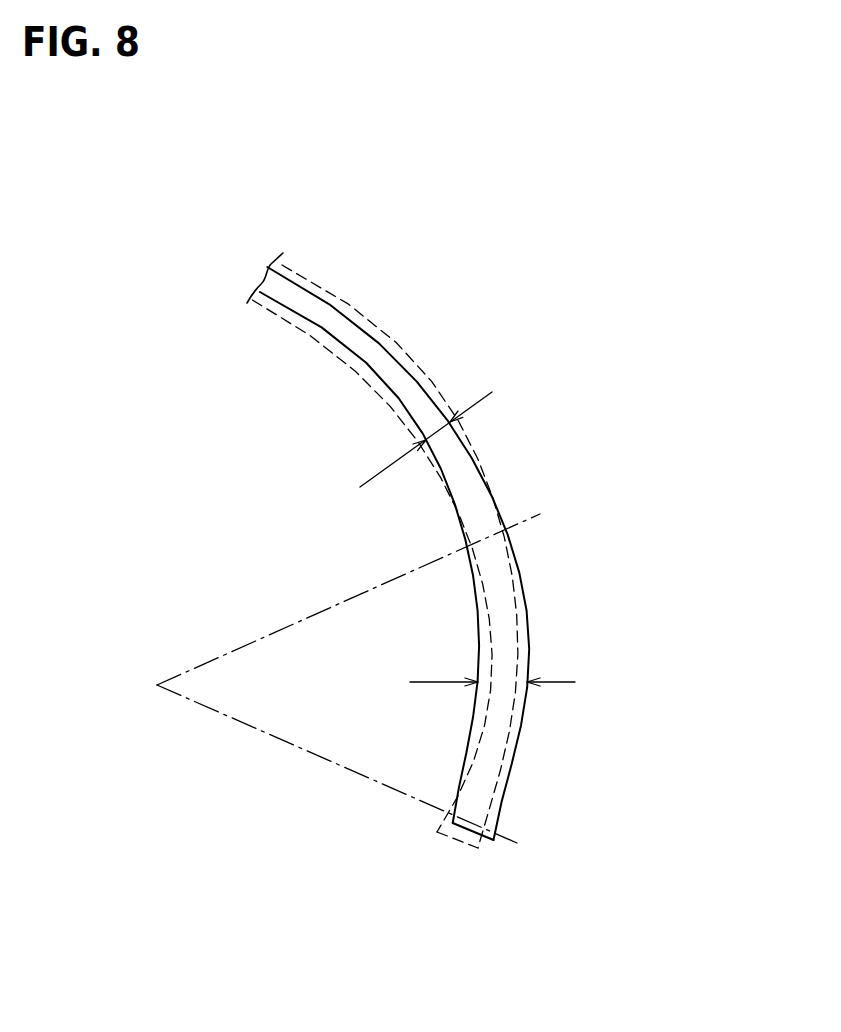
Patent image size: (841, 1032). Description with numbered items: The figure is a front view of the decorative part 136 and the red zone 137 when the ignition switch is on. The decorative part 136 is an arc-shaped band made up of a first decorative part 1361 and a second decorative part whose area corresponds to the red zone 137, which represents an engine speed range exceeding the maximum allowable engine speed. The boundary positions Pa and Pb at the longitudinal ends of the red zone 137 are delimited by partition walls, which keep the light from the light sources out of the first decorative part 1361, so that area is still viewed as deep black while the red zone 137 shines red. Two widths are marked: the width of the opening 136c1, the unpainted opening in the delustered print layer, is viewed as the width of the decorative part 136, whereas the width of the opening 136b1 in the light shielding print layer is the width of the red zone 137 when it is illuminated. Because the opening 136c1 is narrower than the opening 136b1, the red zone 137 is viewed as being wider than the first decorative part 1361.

The decorative part 136 is at (423, 546).
The first decorative part 1361 is at (435, 433).
The red zone 137 is at (503, 682).
The boundary position Pa is at (538, 508).
The boundary position Pb is at (507, 836).
The opening 136c1 is at (524, 428).
The opening 136b1 is at (578, 683).